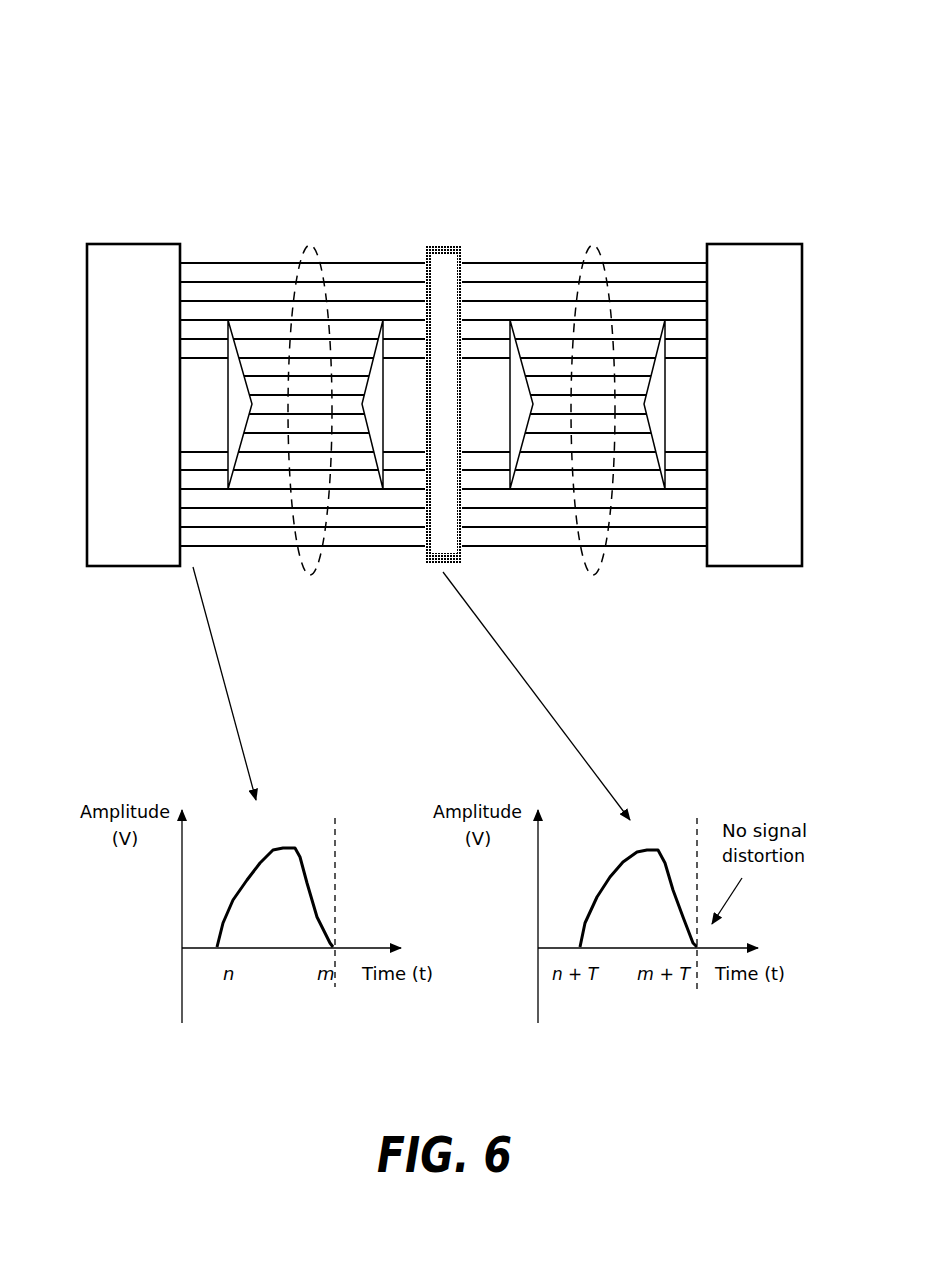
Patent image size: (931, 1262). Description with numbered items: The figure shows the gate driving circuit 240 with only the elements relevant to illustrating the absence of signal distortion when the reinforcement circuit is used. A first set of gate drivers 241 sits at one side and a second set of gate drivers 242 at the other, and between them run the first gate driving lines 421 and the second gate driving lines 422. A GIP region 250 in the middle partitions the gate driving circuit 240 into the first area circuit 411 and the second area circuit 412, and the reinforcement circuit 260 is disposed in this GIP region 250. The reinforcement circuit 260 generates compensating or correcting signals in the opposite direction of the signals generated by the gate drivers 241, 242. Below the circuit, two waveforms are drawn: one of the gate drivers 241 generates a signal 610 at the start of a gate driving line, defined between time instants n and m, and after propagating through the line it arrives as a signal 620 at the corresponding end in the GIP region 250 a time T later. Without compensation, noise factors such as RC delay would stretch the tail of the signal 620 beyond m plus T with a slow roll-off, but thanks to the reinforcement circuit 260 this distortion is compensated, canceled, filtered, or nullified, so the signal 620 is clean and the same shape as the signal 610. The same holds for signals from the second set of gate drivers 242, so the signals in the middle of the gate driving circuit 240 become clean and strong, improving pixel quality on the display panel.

The gate driving circuit 240 is at (168, 76).
The first set of gate drivers 241 is at (98, 317).
The second set of gate drivers 242 is at (788, 310).
The first area circuit 411 is at (440, 150).
The second area circuit 412 is at (826, 150).
The first gate driving lines 421 is at (333, 225).
The second gate driving lines 422 is at (622, 225).
The GIP region 250 is at (426, 564).
The reinforcement circuit 260 is at (449, 530).
The signal 610 is at (248, 872).
The signal 620 is at (609, 873).